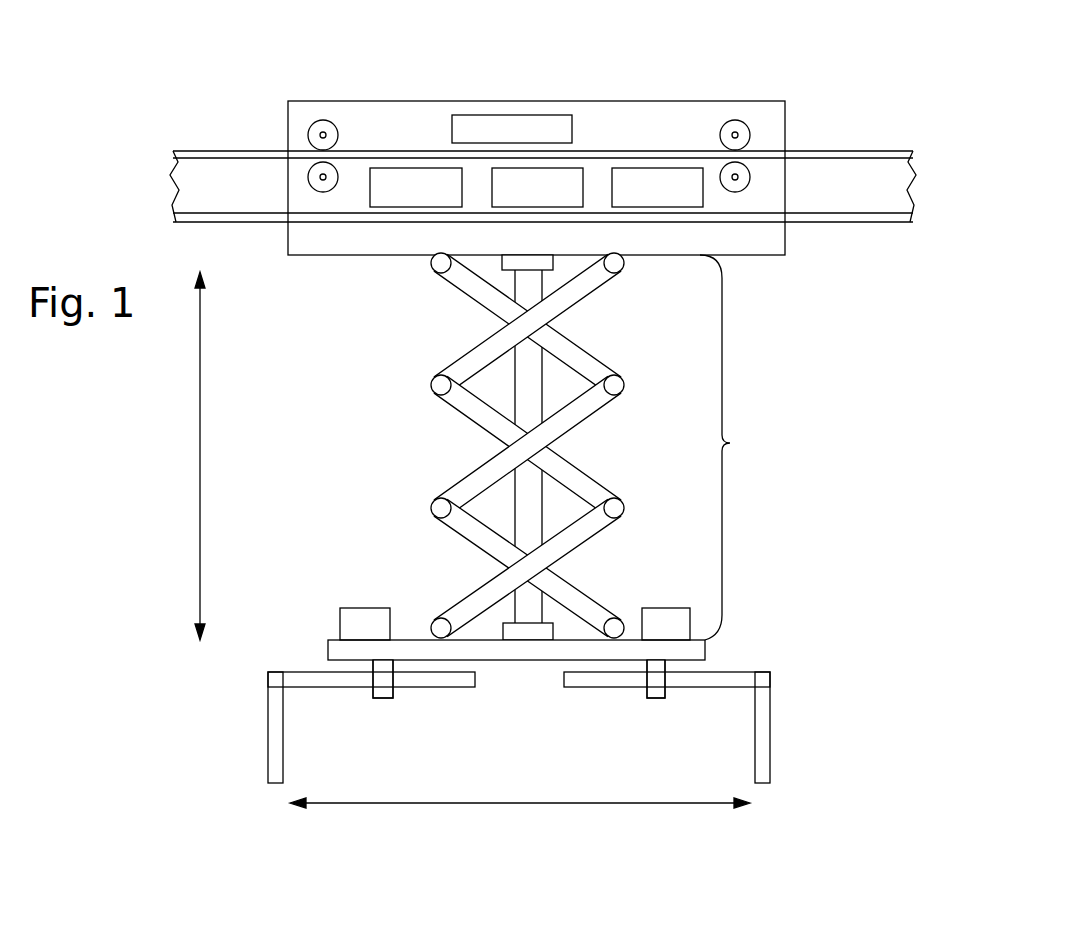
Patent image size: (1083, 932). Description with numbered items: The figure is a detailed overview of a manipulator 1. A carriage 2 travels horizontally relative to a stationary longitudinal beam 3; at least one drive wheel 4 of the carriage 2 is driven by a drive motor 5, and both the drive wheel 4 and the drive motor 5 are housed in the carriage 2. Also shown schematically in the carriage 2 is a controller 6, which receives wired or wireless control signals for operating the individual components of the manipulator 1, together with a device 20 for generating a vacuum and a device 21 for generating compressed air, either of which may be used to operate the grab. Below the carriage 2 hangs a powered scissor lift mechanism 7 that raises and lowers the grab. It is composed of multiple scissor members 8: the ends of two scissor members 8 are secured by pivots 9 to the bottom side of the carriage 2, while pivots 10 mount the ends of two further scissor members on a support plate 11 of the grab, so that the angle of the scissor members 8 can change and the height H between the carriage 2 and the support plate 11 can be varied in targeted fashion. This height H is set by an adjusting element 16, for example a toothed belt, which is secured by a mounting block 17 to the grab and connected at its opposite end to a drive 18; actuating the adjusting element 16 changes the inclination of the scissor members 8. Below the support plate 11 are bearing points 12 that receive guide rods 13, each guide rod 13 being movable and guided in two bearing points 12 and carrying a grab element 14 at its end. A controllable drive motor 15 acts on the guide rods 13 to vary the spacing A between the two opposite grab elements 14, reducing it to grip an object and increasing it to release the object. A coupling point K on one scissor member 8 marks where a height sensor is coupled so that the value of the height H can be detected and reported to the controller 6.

The manipulator 1 is at (823, 53).
The carriage 2 is at (385, 112).
The stationary longitudinal beam 3 is at (280, 150).
The drive wheel 4 is at (325, 118).
The drive motor 5 is at (495, 118).
The controller 6 is at (537, 187).
The scissor lift mechanism 7 is at (732, 445).
The scissor members 8 is at (463, 415).
The pivots 9 is at (438, 263).
The pivots 10 is at (440, 625).
The support plate 11 is at (328, 648).
The bearing point 12 is at (385, 685).
The guide rod 13 is at (350, 680).
The grab element 14 is at (268, 733).
The drive motor 15 is at (365, 612).
The adjusting element 16 is at (525, 512).
The mounting block 17 is at (535, 655).
The drive 18 is at (548, 262).
The device for generating a vacuum 20 is at (416, 187).
The device for generating compressed air 21 is at (657, 187).
The coupling point K is at (500, 325).
The height H is at (200, 447).
The spacing A is at (530, 805).